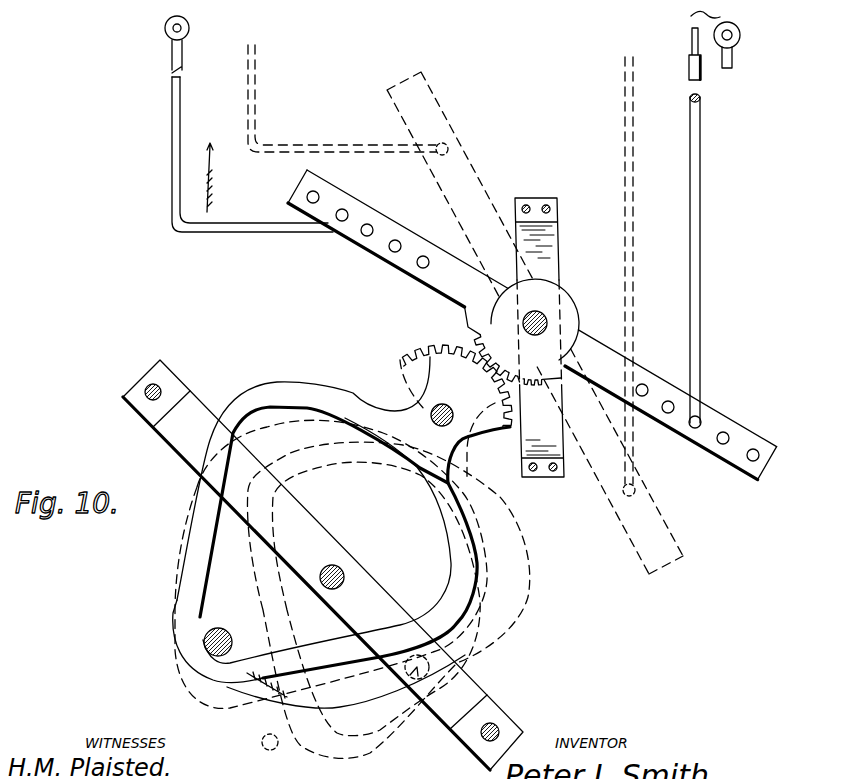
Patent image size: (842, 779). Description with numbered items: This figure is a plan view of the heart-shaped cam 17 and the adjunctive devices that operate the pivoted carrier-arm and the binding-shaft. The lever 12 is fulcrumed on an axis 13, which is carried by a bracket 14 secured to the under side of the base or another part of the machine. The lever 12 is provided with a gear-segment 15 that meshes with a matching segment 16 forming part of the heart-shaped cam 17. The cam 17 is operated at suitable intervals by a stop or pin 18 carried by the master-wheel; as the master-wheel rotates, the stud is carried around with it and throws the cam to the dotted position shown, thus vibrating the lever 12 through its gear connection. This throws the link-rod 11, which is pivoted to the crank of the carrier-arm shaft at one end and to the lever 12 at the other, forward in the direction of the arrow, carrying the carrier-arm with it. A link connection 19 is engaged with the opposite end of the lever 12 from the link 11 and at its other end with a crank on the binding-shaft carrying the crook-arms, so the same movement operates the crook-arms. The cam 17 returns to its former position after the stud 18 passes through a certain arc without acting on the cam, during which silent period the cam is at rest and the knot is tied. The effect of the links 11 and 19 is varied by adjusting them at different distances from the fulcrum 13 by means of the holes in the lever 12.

The link-rod 11 is at (173, 152).
The lever 12 is at (532, 323).
The axis 13 is at (538, 335).
The bracket 14 is at (557, 253).
The gear-segment 15 is at (470, 330).
The matching segment 16 is at (412, 343).
The heart-shaped cam 17 is at (351, 557).
The stop or pin 18 is at (231, 639).
The link connection 19 is at (710, 265).